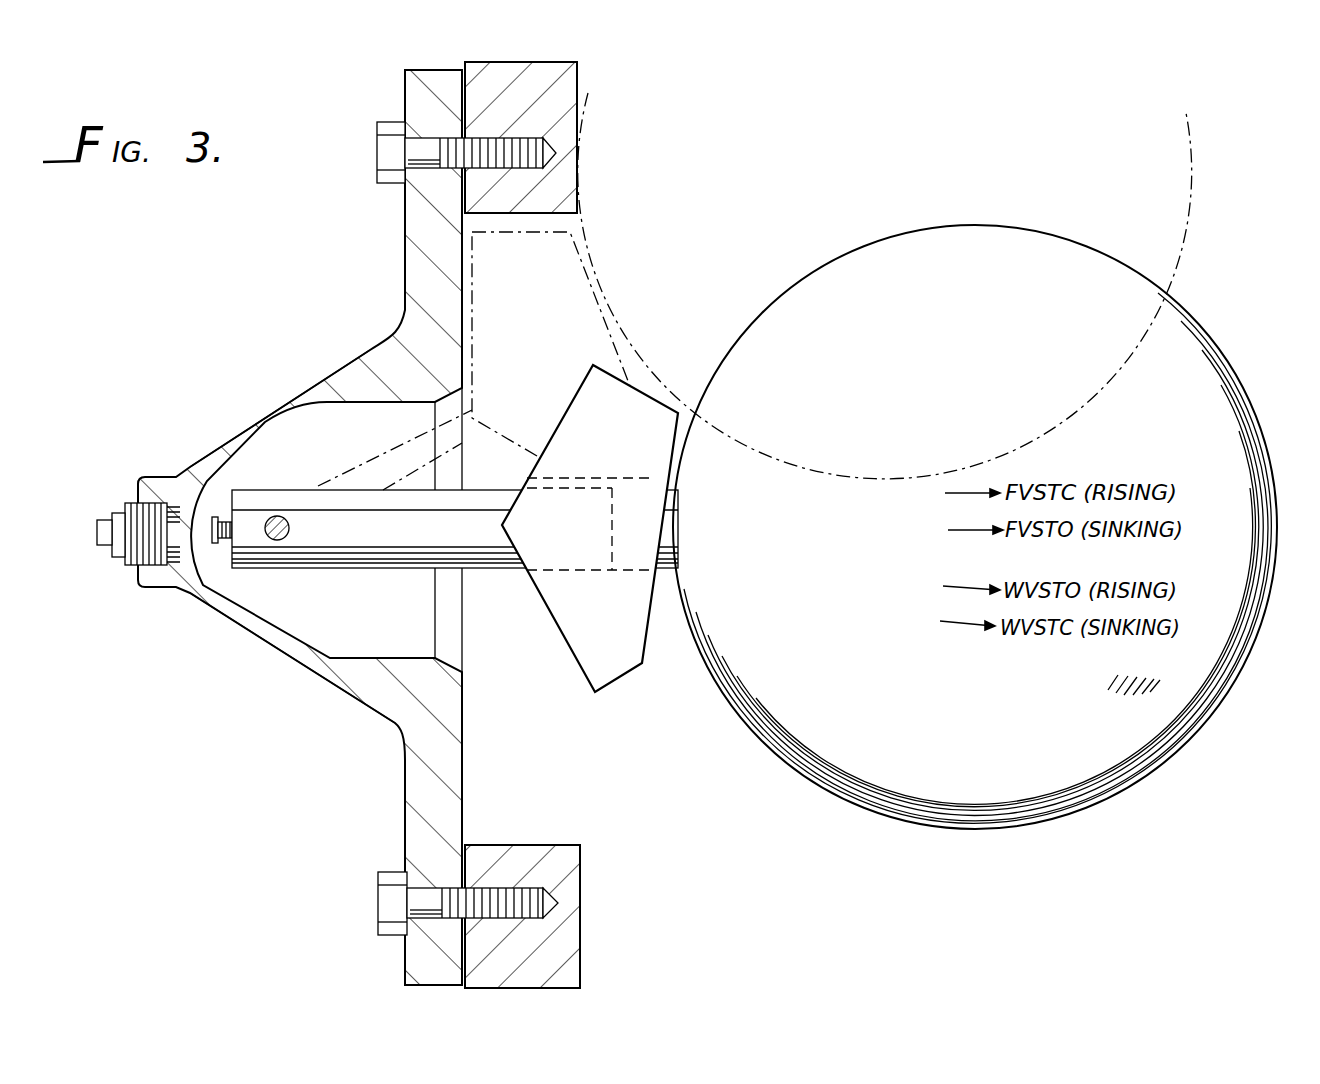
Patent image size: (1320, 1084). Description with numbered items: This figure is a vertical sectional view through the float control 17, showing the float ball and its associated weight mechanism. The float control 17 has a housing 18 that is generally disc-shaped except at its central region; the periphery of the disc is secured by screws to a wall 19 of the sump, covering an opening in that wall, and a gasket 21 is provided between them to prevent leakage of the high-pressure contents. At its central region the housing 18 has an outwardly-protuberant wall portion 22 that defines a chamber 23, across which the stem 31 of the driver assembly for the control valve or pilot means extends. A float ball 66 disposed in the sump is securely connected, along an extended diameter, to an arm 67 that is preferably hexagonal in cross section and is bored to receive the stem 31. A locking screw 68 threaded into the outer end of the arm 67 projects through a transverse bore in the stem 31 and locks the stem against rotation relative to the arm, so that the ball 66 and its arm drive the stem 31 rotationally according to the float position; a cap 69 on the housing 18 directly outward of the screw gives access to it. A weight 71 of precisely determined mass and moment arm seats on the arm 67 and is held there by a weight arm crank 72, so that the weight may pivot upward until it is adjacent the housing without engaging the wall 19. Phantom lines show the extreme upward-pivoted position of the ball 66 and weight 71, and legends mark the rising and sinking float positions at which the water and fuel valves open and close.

The float control 17 is at (366, 300).
The housing 18 is at (365, 697).
The wall 19 is at (572, 112).
The gasket 21 is at (465, 197).
The wall portion 22 is at (282, 407).
The chamber 23 is at (327, 456).
The stem 31 is at (289, 528).
The float ball 66 is at (800, 285).
The arm 67 is at (485, 570).
The locking screw 68 is at (227, 517).
The cap 69 is at (133, 503).
The weight 71 is at (575, 252).
The weight arm crank 72 is at (467, 438).